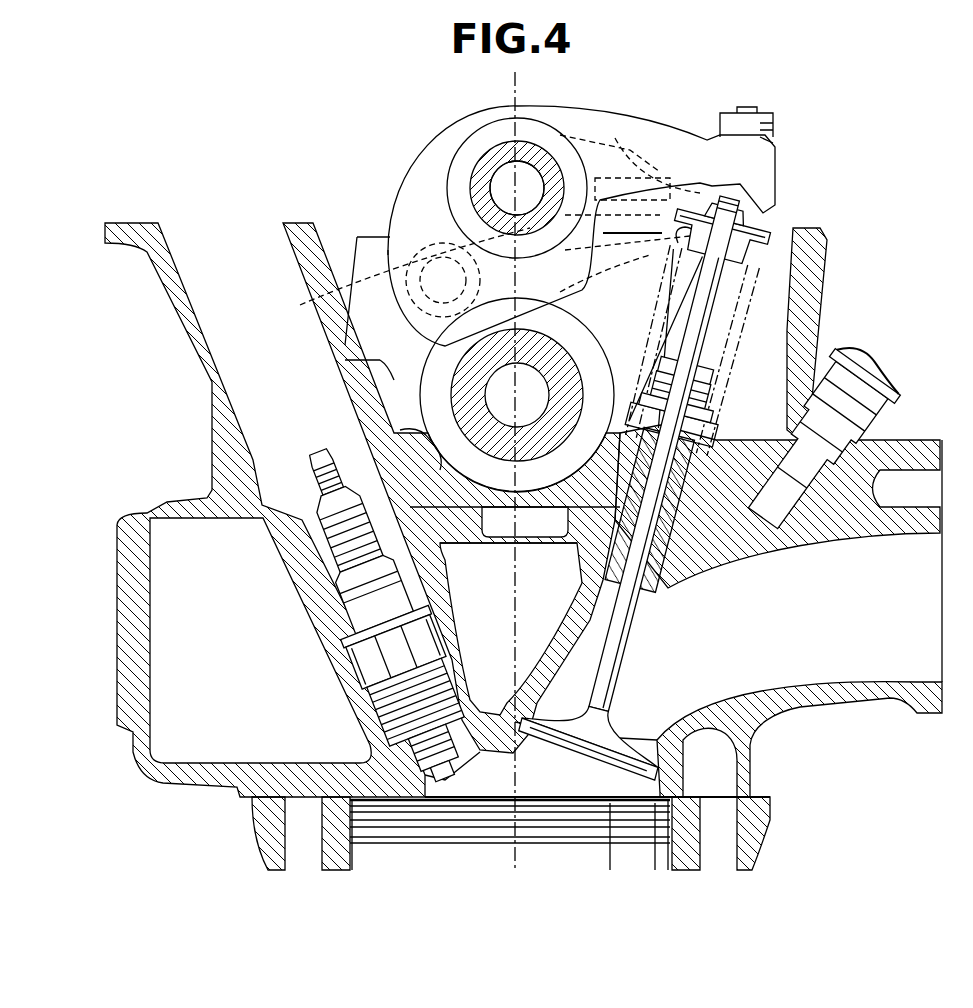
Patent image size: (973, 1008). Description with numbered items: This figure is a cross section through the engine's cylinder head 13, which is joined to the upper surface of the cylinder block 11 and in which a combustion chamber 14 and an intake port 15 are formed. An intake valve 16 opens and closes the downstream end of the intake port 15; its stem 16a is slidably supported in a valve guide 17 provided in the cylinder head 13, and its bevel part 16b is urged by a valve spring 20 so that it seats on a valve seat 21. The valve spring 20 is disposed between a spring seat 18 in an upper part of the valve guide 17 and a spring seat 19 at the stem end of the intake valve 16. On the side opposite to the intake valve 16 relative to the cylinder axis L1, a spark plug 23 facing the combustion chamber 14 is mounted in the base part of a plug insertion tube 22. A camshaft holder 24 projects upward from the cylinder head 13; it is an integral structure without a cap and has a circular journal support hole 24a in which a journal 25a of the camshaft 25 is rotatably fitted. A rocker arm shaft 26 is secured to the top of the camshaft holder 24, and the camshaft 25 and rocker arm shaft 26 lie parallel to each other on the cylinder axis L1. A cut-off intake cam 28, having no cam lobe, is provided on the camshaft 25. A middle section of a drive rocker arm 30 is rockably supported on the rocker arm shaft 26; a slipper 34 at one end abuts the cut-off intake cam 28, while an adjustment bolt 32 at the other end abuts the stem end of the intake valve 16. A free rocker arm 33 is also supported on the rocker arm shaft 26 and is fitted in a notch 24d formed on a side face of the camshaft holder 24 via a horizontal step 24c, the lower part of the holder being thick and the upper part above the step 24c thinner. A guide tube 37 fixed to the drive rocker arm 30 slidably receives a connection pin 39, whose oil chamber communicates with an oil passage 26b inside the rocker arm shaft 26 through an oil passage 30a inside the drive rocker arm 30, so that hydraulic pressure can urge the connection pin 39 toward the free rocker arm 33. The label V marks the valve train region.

The cylinder block 11 is at (752, 856).
The cylinder head 13 is at (205, 457).
The combustion chamber 14 is at (498, 786).
The intake port 15 is at (826, 627).
The intake valve 16 is at (628, 657).
The stem 16a is at (705, 322).
The bevel part 16b is at (612, 695).
The valve guide 17 is at (655, 535).
The spring seat 18 is at (718, 447).
The spring seat 19 is at (755, 228).
The valve spring 20 is at (680, 243).
The valve seat 21 is at (527, 748).
The plug insertion tube 22 is at (300, 270).
The spark plug 23 is at (345, 533).
The camshaft holder 24 is at (378, 333).
The journal support hole 24a is at (410, 432).
The horizontal step 24c is at (390, 352).
The notch 24d is at (580, 240).
The camshaft 25 is at (655, 455).
The journal 25a is at (462, 556).
The rocker arm shaft 26 is at (480, 160).
The oil passage 26b is at (500, 185).
The cut-off intake cam 28 is at (605, 450).
The drive rocker arm 30 is at (603, 114).
The oil passage 30a is at (565, 290).
The adjustment bolt 32 is at (766, 120).
The free rocker arm 33 is at (622, 150).
The slipper 34 is at (560, 348).
The guide tube 37 is at (443, 253).
The connection pin 39 is at (318, 302).
The valve train V is at (410, 157).
The cylinder axis L1 is at (517, 846).